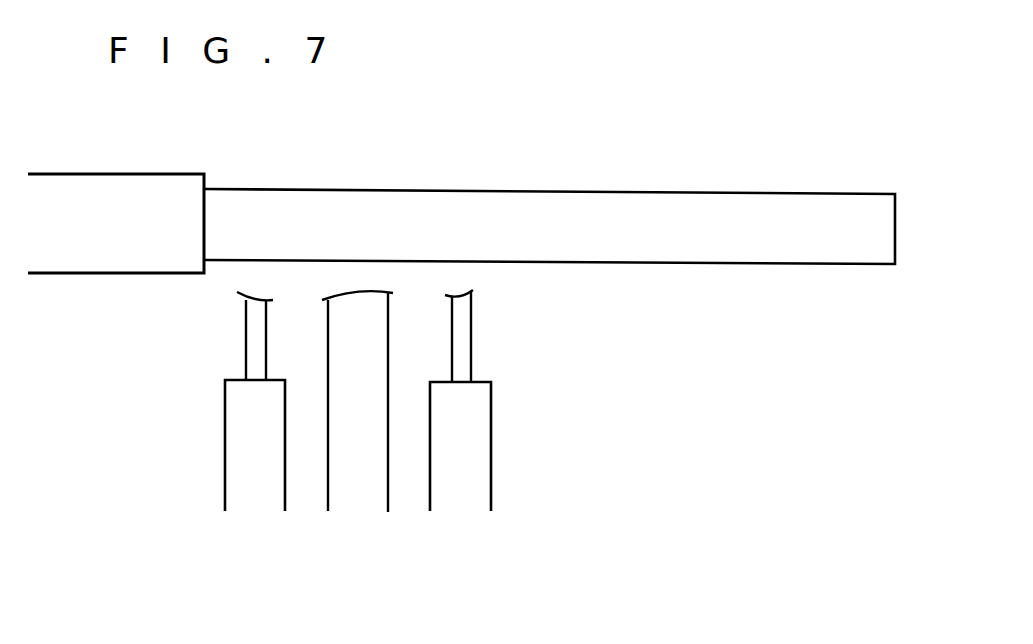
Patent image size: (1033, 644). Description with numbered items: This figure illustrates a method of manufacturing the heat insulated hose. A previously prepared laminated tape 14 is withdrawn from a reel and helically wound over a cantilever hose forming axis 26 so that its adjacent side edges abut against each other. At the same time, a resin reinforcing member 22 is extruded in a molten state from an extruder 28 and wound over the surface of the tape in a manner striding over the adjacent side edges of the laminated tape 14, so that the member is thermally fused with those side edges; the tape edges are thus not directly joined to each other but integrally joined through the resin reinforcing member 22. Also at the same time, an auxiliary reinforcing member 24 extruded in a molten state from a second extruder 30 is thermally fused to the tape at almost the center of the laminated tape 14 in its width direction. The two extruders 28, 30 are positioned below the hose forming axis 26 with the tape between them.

The laminated tape 14 is at (352, 465).
The resin reinforcing member 22 is at (253, 366).
The auxiliary reinforcing member 24 is at (462, 353).
The hose forming axis 26 is at (803, 209).
The extruder 28 is at (252, 494).
The extruder 30 is at (480, 484).